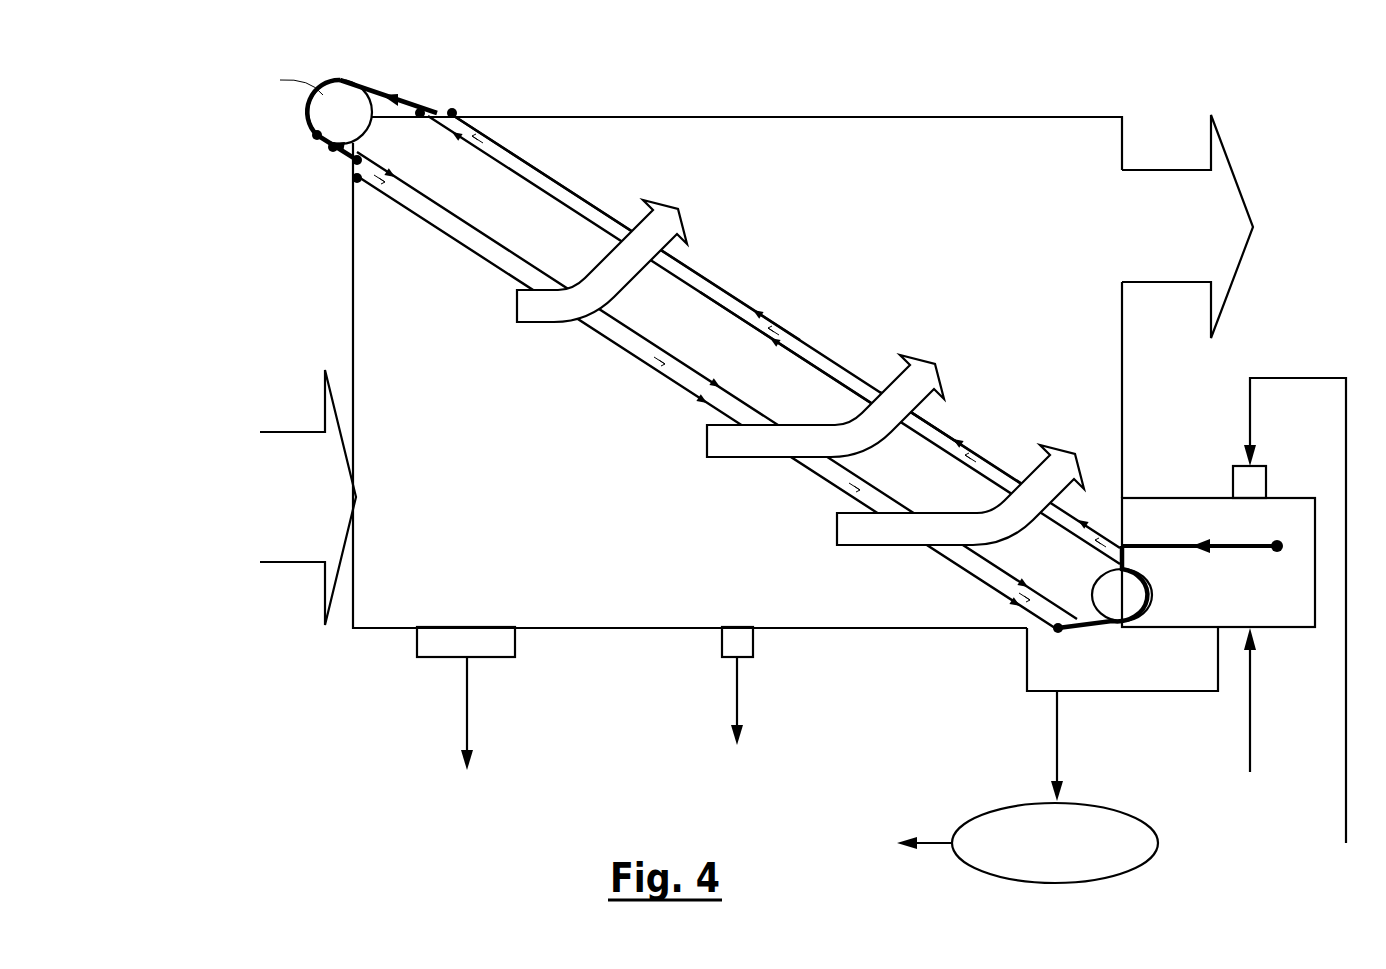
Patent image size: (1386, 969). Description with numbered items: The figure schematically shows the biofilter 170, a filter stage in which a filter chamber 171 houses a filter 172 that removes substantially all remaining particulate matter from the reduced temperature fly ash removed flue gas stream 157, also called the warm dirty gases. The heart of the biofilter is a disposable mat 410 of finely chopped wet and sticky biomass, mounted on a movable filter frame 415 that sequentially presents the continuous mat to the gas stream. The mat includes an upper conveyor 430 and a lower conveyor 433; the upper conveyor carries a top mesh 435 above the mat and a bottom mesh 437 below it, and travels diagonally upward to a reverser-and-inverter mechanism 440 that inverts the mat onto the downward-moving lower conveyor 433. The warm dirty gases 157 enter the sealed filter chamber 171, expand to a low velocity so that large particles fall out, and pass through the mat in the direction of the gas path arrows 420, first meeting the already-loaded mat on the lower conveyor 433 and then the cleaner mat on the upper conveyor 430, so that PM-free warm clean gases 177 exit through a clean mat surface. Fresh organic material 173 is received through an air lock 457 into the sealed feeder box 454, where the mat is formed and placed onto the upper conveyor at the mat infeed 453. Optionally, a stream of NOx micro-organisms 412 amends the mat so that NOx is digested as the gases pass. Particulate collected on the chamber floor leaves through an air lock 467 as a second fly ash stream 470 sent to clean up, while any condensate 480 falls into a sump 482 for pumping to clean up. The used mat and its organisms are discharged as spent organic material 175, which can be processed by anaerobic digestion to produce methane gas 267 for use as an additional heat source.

The biofilter 170 is at (792, 82).
The filter chamber 171 is at (947, 127).
The filter 172 is at (826, 256).
The cleaned flue gas 177 is at (1153, 177).
The reduced temperature fly ash removed flue gas stream 157 is at (303, 565).
The organic material stream 173 is at (1283, 378).
The mat 410 is at (708, 272).
The gas path arrows 420 is at (565, 318).
The upper conveyor 430 is at (812, 345).
The lower conveyor 433 is at (502, 257).
The top mesh 435 is at (957, 425).
The bottom mesh 437 is at (903, 427).
The reverser-and-inverter mechanism 440 is at (323, 121).
The movable filter frame 415 is at (1095, 620).
The mat infeed 453 is at (1153, 546).
The feeder box 454 is at (1183, 588).
The air lock 457 is at (1267, 483).
The stream of NOx micro-organisms 412 is at (1246, 702).
The air lock 467 is at (481, 633).
The second fly ash stream 470 is at (468, 721).
The condensate 480 is at (738, 690).
The sump 482 is at (755, 654).
The spent organic material 175 is at (1058, 748).
The methane gas 267 is at (935, 838).